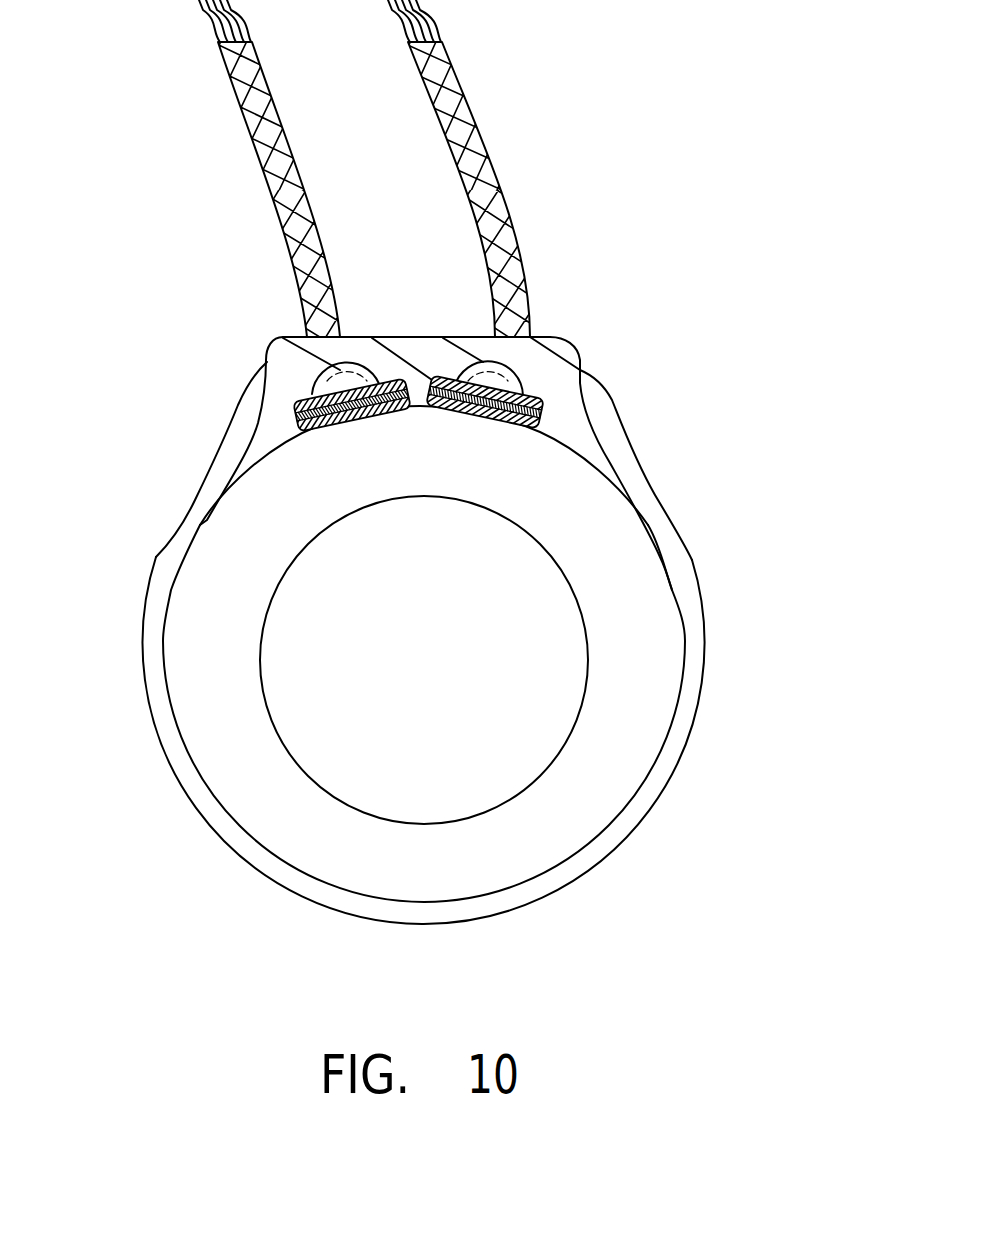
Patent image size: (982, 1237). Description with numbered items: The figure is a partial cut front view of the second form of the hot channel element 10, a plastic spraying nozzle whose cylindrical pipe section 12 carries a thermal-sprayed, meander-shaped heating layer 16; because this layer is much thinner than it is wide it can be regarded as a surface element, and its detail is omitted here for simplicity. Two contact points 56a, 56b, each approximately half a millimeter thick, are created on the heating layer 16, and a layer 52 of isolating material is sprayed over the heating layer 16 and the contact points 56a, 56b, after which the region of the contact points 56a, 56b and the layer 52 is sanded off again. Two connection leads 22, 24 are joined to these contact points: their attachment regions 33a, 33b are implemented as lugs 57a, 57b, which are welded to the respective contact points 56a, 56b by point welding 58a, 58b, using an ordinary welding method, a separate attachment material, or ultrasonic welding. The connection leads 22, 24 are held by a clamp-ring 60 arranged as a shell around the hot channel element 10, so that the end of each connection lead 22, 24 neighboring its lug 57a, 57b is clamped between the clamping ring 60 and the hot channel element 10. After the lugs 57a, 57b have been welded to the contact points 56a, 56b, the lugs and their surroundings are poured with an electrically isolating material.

The hot channel element 10 is at (698, 227).
The cylindrical pipe section 12 is at (650, 670).
The heating layer 16 is at (617, 818).
The connection lead 22 is at (240, 92).
The connection lead 24 is at (472, 117).
The attachment region 33a is at (523, 372).
The attachment region 33b is at (320, 372).
The layer of isolating material 52 is at (283, 413).
The contact point 56a is at (512, 413).
The contact point 56b is at (350, 420).
The lug 57a is at (538, 388).
The lug 57b is at (298, 401).
The point welding 58a is at (540, 418).
The point welding 58b is at (300, 438).
The clamp-ring 60 is at (668, 547).